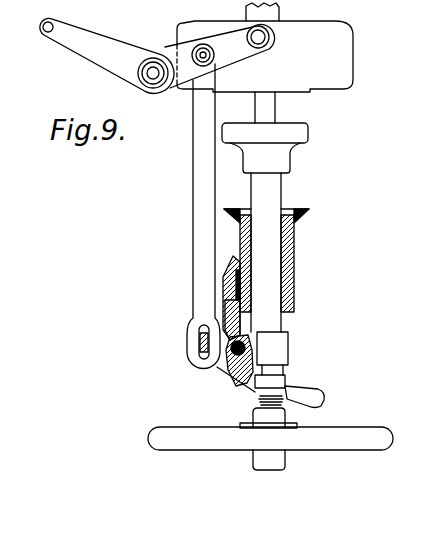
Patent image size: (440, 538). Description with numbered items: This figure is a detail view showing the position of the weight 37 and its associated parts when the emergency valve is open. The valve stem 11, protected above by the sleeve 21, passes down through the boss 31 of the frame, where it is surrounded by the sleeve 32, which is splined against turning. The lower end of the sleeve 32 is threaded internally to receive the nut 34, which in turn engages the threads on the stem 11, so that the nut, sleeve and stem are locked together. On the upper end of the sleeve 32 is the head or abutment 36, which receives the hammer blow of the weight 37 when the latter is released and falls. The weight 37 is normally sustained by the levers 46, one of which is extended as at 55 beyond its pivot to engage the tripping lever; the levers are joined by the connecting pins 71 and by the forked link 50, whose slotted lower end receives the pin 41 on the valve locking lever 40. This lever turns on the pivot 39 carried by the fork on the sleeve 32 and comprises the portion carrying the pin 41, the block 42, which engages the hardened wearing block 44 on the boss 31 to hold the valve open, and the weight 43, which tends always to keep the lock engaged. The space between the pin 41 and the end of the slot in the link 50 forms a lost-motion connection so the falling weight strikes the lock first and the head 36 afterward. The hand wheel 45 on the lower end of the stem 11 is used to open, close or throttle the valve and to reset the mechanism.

The stem 11 is at (277, 104).
The sleeve 21 is at (282, 13).
The boss 31 is at (296, 270).
The sleeve 32 is at (283, 193).
The nut 34 is at (284, 381).
The head or abutment 36 is at (308, 134).
The weight 37 is at (353, 53).
The pivot 39 is at (240, 362).
The valve locking lever 40 is at (223, 307).
The pin 41 is at (188, 341).
The block 42 is at (223, 276).
The weight 43 is at (318, 390).
The hardened wearing block 44 is at (223, 294).
The hand wheel 45 is at (365, 432).
The levers 46 is at (228, 46).
The forked link 50 is at (193, 156).
The lever extension 55 is at (79, 50).
The connecting pins 71 is at (187, 52).